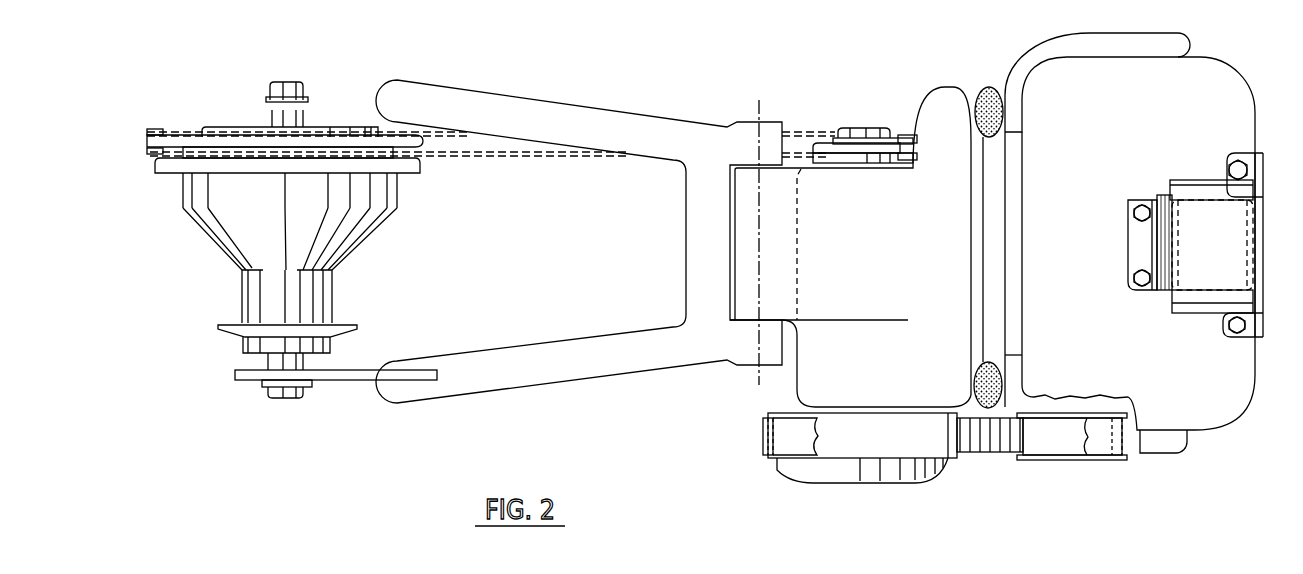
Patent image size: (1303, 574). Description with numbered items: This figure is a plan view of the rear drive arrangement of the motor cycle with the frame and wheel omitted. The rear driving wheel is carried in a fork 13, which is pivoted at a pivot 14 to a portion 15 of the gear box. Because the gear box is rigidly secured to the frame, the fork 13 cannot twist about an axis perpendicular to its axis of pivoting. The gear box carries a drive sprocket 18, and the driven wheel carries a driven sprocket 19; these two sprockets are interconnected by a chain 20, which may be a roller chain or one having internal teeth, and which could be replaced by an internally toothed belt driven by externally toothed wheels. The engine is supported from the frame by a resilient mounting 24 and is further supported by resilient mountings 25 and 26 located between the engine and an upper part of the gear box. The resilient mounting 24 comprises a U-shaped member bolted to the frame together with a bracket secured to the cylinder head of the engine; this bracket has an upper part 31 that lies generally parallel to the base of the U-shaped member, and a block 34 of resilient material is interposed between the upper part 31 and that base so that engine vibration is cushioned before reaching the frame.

The fork 13 is at (520, 369).
The pivot 14 is at (762, 302).
The portion of gear box 15 is at (802, 246).
The drive sprocket 18 is at (866, 145).
The driven sprocket 19 is at (350, 145).
The chain 20 is at (500, 158).
The resilient mounting 24 is at (1166, 199).
The resilient mounting 25 is at (976, 380).
The resilient mounting 26 is at (990, 88).
The upper part of bracket 31 is at (1205, 215).
The block of resilient material 34 is at (1185, 195).